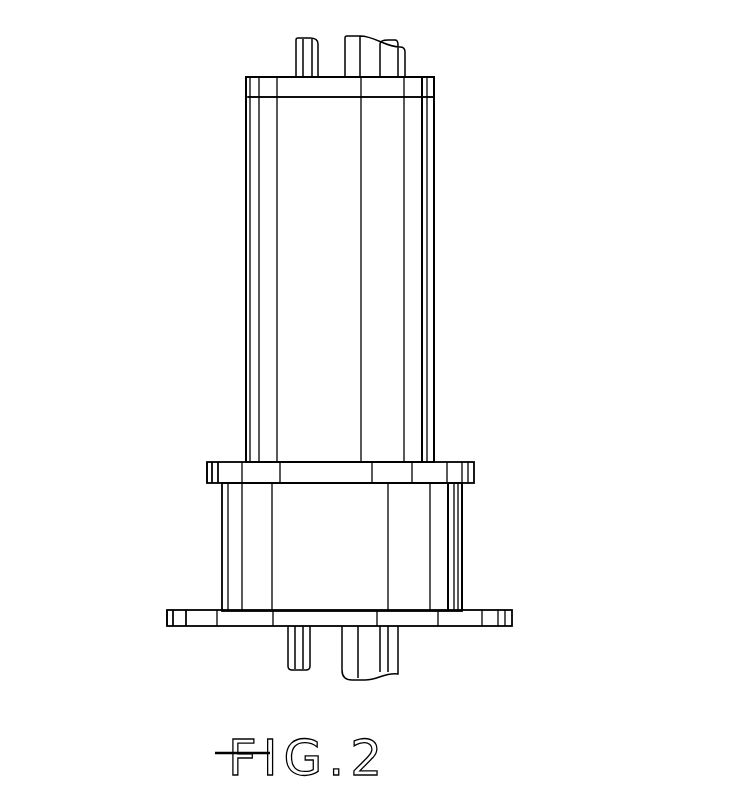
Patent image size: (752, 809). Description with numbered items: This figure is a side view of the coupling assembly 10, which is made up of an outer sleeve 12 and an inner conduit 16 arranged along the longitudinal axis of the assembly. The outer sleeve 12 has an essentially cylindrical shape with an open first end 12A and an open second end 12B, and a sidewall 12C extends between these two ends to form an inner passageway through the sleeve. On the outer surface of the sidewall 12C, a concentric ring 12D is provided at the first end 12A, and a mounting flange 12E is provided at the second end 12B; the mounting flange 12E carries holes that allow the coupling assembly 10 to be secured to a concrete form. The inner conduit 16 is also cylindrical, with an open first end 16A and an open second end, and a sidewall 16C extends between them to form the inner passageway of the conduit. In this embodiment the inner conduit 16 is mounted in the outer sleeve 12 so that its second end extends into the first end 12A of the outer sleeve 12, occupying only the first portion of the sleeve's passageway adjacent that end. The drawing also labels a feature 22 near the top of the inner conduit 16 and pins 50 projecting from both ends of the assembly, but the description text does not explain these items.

The coupling assembly 10 is at (480, 250).
The outer sleeve 12 is at (463, 528).
The first end 12A is at (474, 473).
The second end 12B is at (512, 622).
The sidewall 12C is at (462, 568).
The concentric ring 12D is at (207, 472).
The mounting flange 12E is at (167, 620).
The inner conduit 16 is at (435, 208).
The first end 16A is at (437, 107).
The sidewall 16C is at (433, 365).
The top surface 22 is at (437, 78).
The terminal pins 50 is at (407, 58).